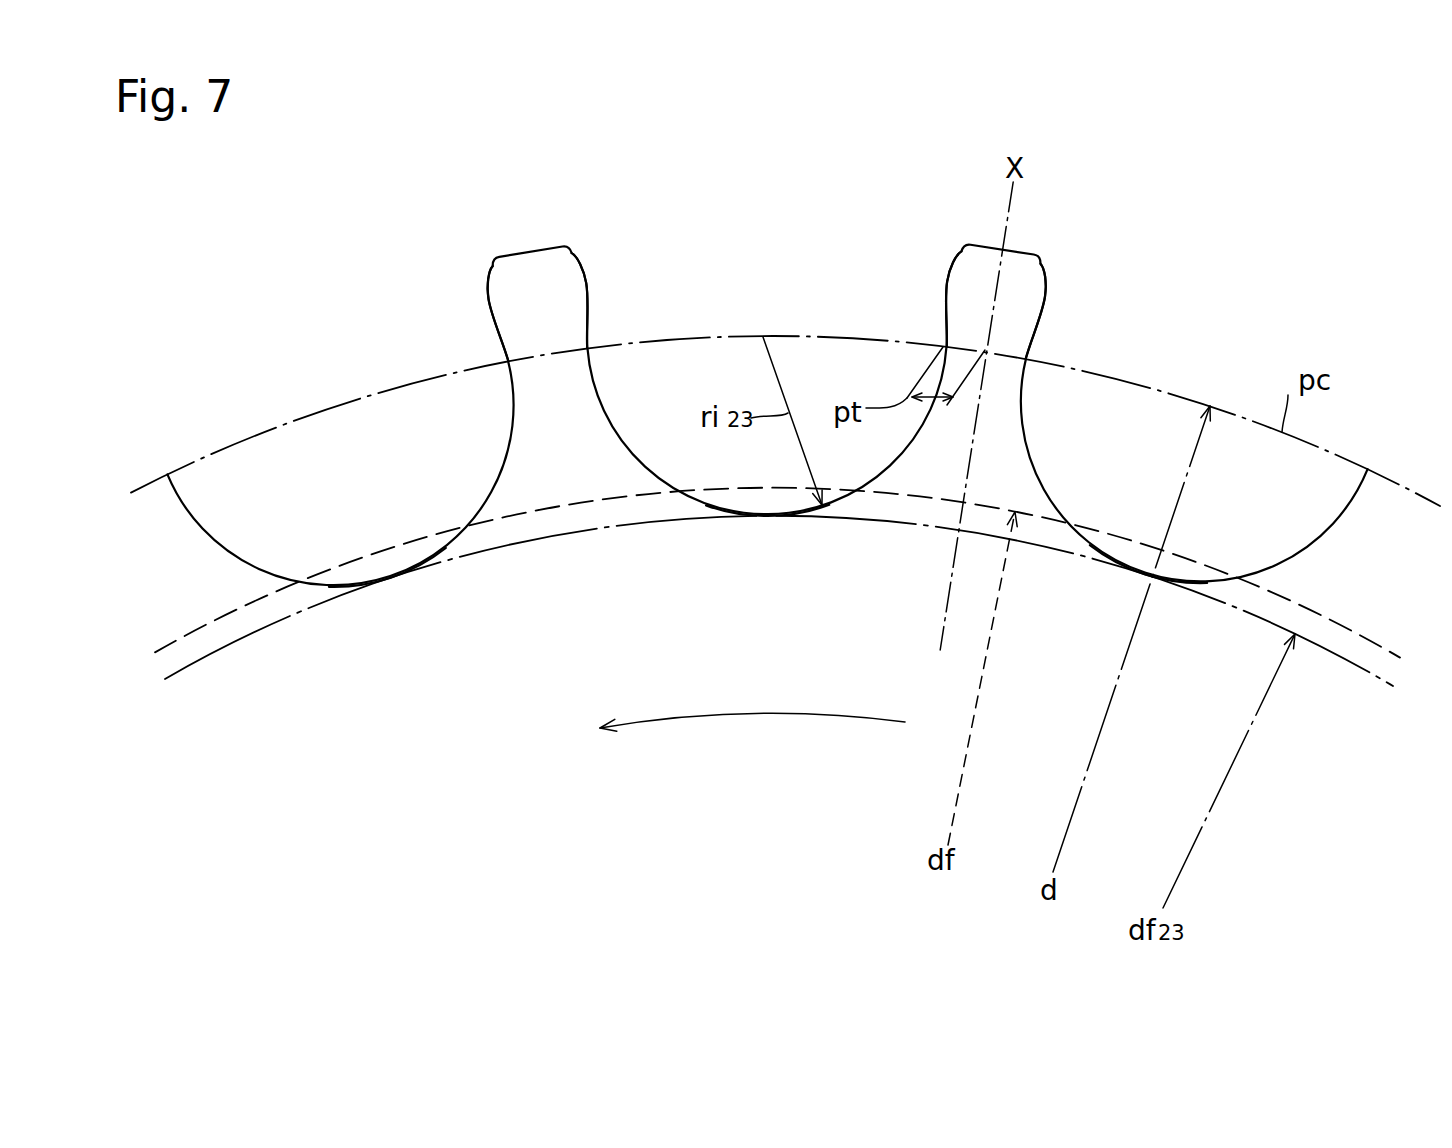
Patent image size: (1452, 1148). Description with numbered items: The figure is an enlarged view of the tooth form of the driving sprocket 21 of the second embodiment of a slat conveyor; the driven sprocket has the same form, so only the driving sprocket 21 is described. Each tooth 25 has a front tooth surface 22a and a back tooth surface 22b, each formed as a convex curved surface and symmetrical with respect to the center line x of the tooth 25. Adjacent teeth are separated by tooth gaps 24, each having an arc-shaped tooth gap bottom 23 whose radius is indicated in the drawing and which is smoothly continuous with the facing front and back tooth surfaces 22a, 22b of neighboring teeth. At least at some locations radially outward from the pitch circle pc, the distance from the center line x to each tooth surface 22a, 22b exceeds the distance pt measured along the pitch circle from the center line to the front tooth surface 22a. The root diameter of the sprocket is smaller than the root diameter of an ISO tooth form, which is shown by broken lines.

The driving sprocket 21 is at (483, 771).
The front tooth surface 22a is at (486, 304).
The back tooth surface 22b is at (590, 288).
The tooth gap bottom 23 is at (338, 588).
The tooth gap 24 is at (253, 463).
The tooth 25 is at (536, 250).